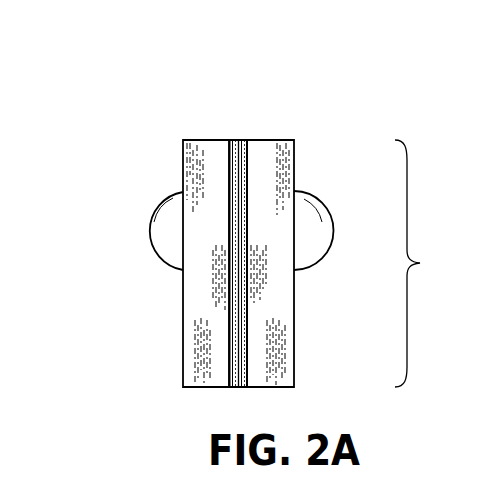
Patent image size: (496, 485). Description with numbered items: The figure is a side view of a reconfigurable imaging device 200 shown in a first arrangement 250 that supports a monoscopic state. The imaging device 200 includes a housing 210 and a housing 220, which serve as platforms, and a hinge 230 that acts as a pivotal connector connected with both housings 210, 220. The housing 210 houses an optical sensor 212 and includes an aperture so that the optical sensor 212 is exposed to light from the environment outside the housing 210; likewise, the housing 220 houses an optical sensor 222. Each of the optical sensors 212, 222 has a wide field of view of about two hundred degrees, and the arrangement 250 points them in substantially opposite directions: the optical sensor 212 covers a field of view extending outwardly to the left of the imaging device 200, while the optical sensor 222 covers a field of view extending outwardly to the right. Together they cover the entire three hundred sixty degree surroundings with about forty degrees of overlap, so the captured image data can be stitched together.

The imaging device 200 is at (272, 51).
The housing 210 is at (210, 150).
The housing 220 is at (264, 150).
The optical sensor 212 is at (158, 244).
The optical sensor 222 is at (310, 232).
The hinge 230 is at (240, 387).
The first arrangement 250 is at (427, 263).